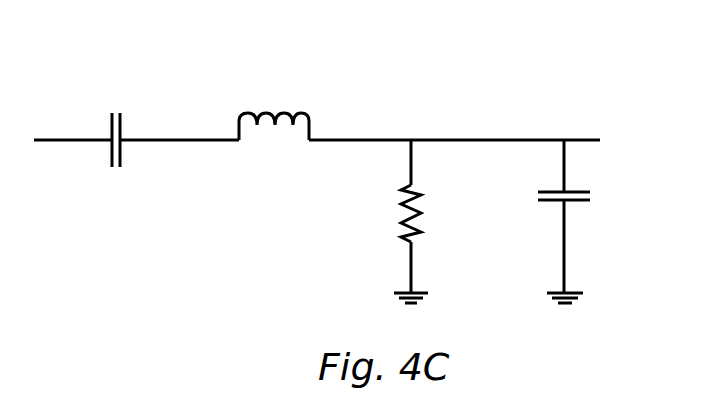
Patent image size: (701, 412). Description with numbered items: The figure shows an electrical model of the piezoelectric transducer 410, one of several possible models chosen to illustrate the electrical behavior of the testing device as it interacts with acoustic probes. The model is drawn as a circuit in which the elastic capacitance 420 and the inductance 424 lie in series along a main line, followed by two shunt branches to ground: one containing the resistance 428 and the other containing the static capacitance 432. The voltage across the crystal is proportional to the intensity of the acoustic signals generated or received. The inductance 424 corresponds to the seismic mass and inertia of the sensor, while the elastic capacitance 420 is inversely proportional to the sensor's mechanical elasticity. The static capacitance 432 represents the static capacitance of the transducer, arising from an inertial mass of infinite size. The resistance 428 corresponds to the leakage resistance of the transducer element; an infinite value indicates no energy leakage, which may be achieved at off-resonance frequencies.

The piezoelectric transducer 410 is at (522, 93).
The capacitance Ce 420 is at (122, 156).
The inductance L 424 is at (311, 133).
The resistance R 428 is at (405, 186).
The capacitance C0 432 is at (581, 203).